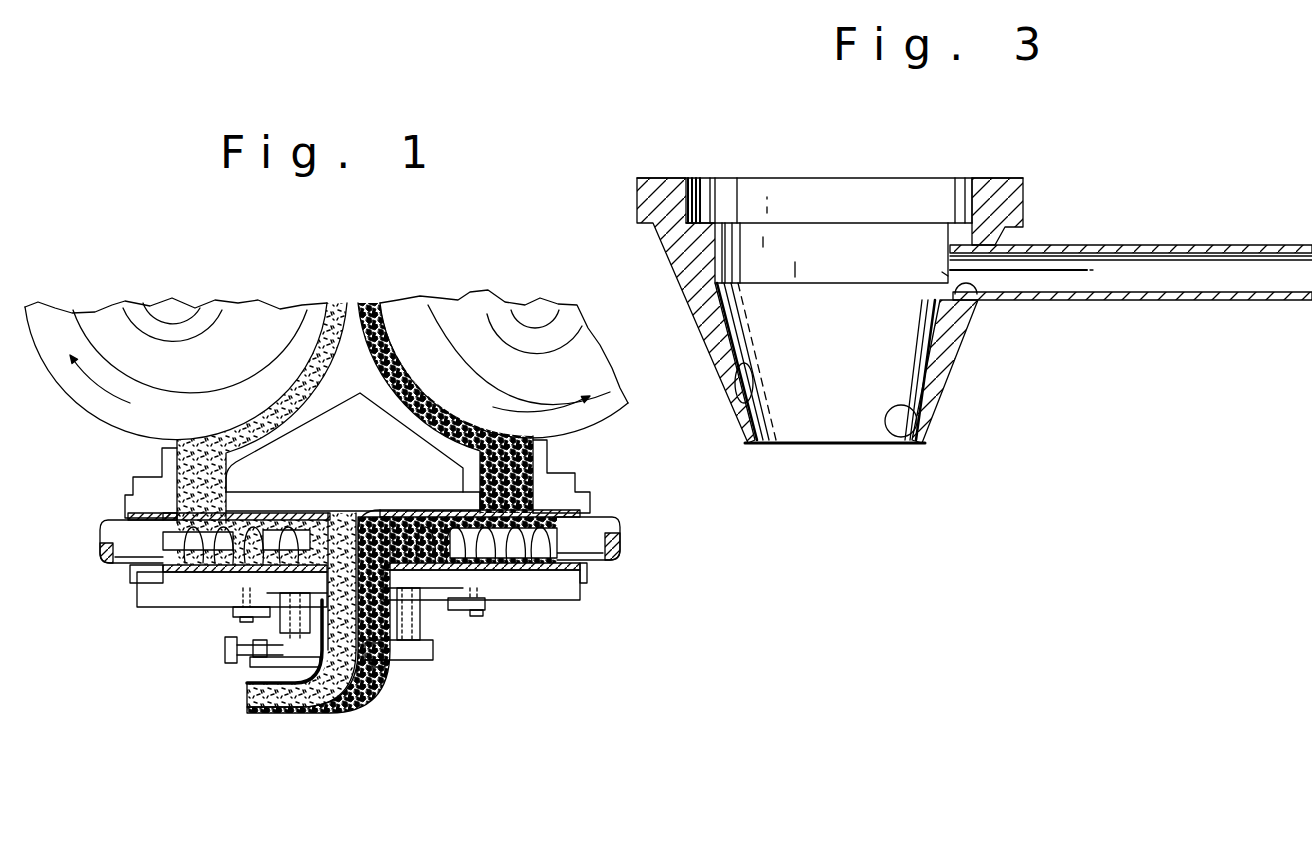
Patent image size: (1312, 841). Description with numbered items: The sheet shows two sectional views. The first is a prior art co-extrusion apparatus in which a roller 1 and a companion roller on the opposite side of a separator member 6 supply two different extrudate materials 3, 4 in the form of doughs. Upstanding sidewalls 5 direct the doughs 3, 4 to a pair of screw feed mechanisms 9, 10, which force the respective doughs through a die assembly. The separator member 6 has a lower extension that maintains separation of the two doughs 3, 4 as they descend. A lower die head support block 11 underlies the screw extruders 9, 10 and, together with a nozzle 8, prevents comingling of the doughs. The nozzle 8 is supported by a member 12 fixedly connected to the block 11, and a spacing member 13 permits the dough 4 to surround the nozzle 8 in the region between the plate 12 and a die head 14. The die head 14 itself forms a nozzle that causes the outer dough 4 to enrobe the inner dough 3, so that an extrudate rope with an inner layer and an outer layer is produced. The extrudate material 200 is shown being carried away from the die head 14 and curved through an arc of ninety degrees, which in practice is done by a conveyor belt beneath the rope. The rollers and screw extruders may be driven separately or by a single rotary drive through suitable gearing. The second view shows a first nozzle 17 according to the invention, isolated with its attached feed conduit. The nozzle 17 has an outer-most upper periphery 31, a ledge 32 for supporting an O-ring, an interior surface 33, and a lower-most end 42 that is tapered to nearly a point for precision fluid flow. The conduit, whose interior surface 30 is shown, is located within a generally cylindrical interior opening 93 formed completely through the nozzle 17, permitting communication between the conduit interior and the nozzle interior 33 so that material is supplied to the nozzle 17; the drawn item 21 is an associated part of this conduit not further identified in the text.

In FIG. 1, the roller 1 is at (88, 397).
In FIG. 1, the extrudate material 3 is at (203, 453).
In FIG. 1, the extrudate material 4 is at (373, 307).
In FIG. 1, the upstanding sidewalls 5 is at (143, 483).
In FIG. 1, the separator member 6 is at (368, 463).
In FIG. 1, the nozzle 8 is at (307, 650).
In FIG. 1, the screw feed mechanism 9 is at (100, 533).
In FIG. 1, the screw feed mechanism 10 is at (607, 527).
In FIG. 1, the lower die head support block 11 is at (150, 590).
In FIG. 1, the member 12 is at (283, 627).
In FIG. 1, the spacing member 13 is at (300, 640).
In FIG. 1, the die head 14 is at (253, 670).
In FIG. 1, the extrudate material 200 is at (253, 673).
In FIG. 3, the nozzle 17 is at (678, 357).
In FIG. 3, the inner tube 21 is at (1100, 248).
In FIG. 3, the interior surface 30 is at (1148, 275).
In FIG. 3, the upper periphery 31 is at (633, 207).
In FIG. 3, the ledge 32 is at (710, 220).
In FIG. 3, the interior surface 33 is at (740, 410).
In FIG. 3, the lower-most end 42 is at (752, 447).
In FIG. 3, the interior opening 93 is at (942, 272).